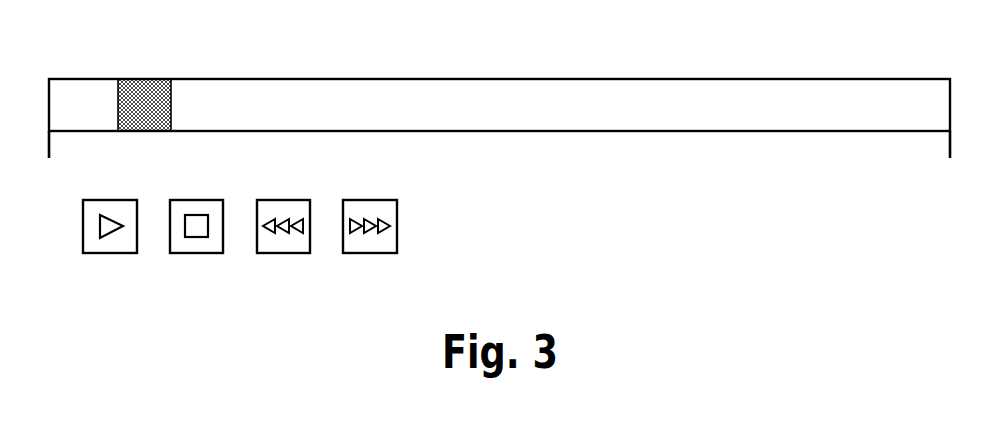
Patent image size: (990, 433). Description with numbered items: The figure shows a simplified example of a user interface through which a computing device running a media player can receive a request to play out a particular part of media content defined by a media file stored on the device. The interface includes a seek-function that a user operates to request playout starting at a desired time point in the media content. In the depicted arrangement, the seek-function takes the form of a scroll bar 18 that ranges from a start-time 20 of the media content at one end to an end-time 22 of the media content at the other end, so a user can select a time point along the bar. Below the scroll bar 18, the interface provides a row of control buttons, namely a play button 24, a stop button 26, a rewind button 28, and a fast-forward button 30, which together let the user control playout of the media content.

The scroll bar 18 is at (567, 79).
The start-time 20 is at (49, 159).
The end-time 22 is at (950, 159).
The play button 24 is at (110, 253).
The stop button 26 is at (197, 253).
The rewind button 28 is at (283, 253).
The fast-forward button 30 is at (368, 253).